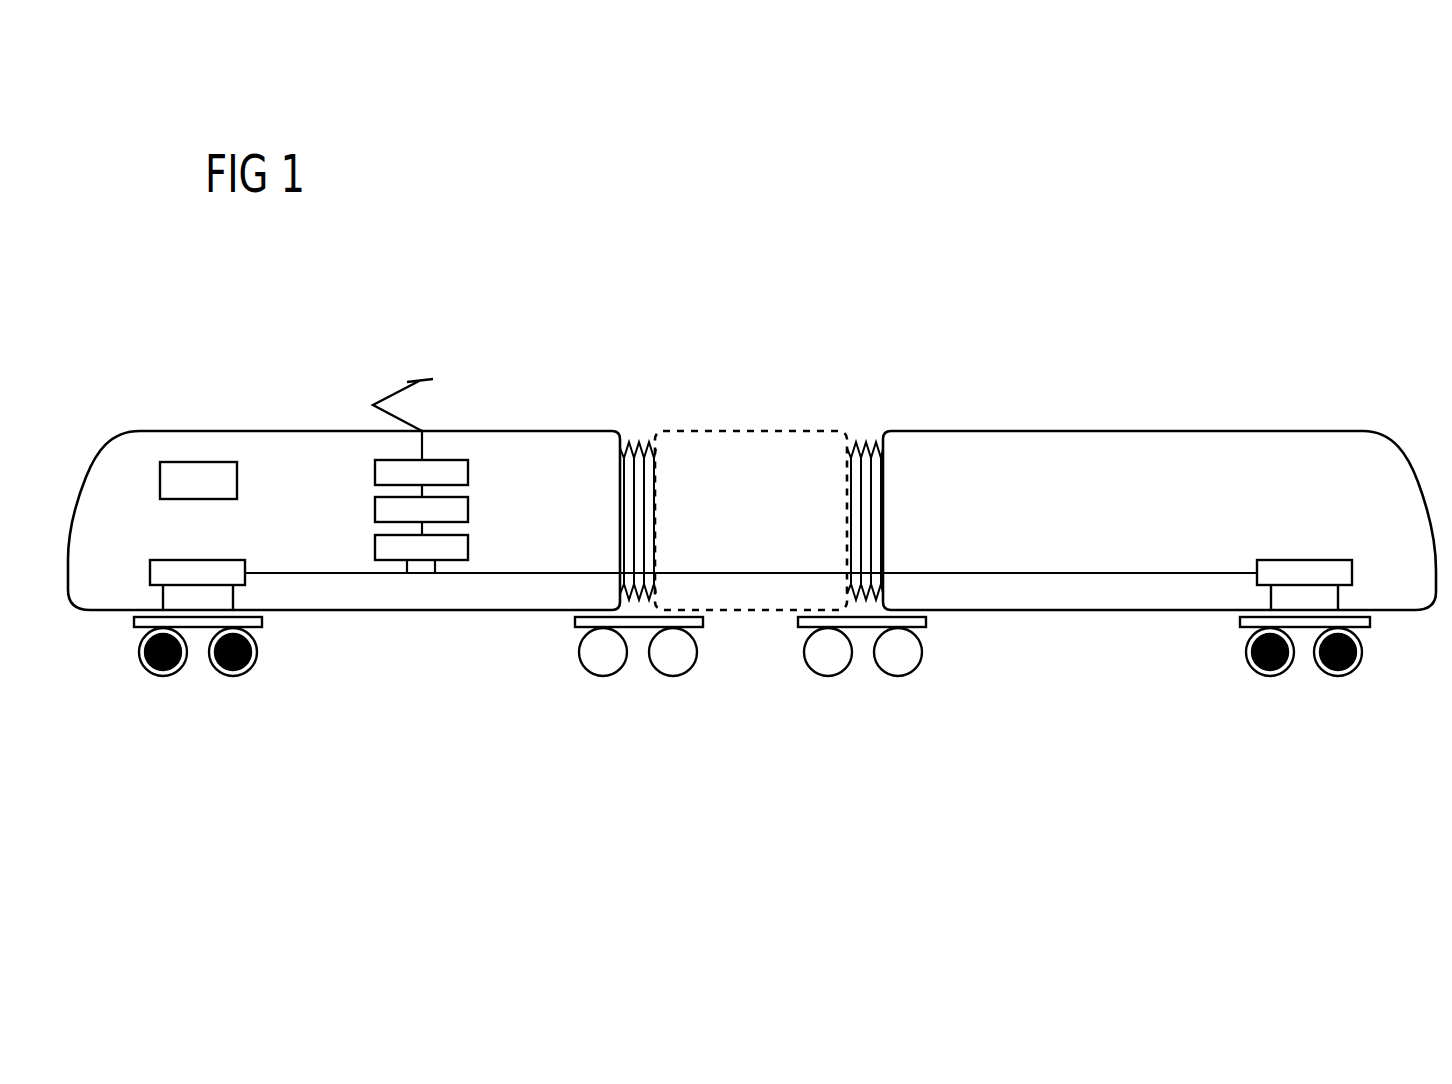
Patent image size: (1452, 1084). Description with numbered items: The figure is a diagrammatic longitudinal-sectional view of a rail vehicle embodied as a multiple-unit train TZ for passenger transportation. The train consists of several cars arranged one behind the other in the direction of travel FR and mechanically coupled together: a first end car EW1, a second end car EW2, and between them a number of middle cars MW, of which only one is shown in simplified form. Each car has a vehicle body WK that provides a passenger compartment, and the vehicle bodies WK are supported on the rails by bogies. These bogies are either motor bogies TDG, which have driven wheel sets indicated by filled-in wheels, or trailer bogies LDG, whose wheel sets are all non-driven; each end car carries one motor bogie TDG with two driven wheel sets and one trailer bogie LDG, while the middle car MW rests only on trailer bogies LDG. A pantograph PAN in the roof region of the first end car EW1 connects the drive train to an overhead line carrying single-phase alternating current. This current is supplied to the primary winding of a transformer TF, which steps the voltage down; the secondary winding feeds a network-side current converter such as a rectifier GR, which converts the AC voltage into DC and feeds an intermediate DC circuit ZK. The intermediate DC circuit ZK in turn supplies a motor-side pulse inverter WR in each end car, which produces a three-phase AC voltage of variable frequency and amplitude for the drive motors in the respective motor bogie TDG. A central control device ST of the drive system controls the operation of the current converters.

The multiple-unit train TZ is at (168, 400).
The first end car EW1 is at (261, 418).
The second end car EW2 is at (1118, 418).
The middle car MW is at (753, 418).
The vehicle body WK is at (420, 612).
The pantograph PAN is at (419, 378).
The central control device ST is at (238, 481).
The transformer TF is at (470, 472).
The rectifier GR is at (470, 510).
The intermediate DC circuit ZK is at (470, 548).
The pulse inverter WR is at (149, 571).
The motor bogie TDG is at (197, 670).
The trailer bogie LDG is at (638, 667).
The direction of travel FR is at (846, 268).